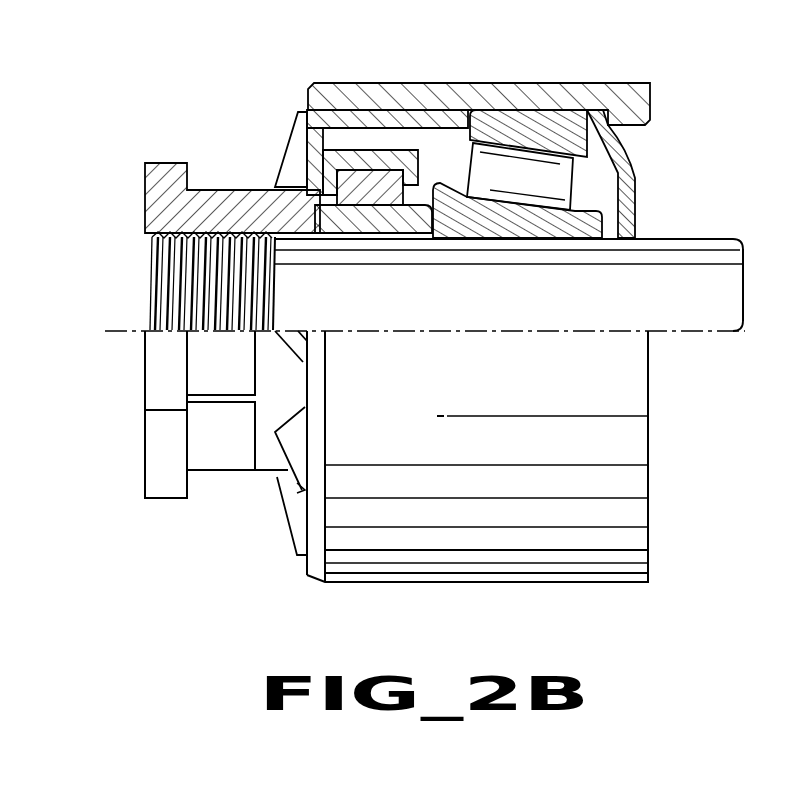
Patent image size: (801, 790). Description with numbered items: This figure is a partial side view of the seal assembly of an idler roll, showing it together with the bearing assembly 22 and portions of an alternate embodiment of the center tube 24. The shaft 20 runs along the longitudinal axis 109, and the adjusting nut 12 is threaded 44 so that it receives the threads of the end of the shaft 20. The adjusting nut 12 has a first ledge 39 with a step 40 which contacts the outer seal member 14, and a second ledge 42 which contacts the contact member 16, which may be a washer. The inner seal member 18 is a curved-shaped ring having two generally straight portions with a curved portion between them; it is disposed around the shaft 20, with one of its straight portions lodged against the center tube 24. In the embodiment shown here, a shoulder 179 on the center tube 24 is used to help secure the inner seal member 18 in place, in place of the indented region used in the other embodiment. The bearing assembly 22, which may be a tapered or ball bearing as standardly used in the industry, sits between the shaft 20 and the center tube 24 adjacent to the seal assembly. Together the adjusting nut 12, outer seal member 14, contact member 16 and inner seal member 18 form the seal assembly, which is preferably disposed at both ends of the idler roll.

The adjusting nut 12 is at (174, 163).
The outer seal member 14 is at (305, 112).
The contact member 16 is at (380, 173).
The inner seal member 18 is at (633, 164).
The shaft 20 is at (548, 307).
The bearing assembly 22 is at (540, 191).
The center tube 24 is at (650, 98).
The first ledge 39 is at (237, 190).
The step 40 is at (316, 197).
The second ledge 42 is at (380, 203).
The threads 44 is at (156, 286).
The longitudinal axis 109 is at (692, 333).
The shoulder 179 is at (618, 93).